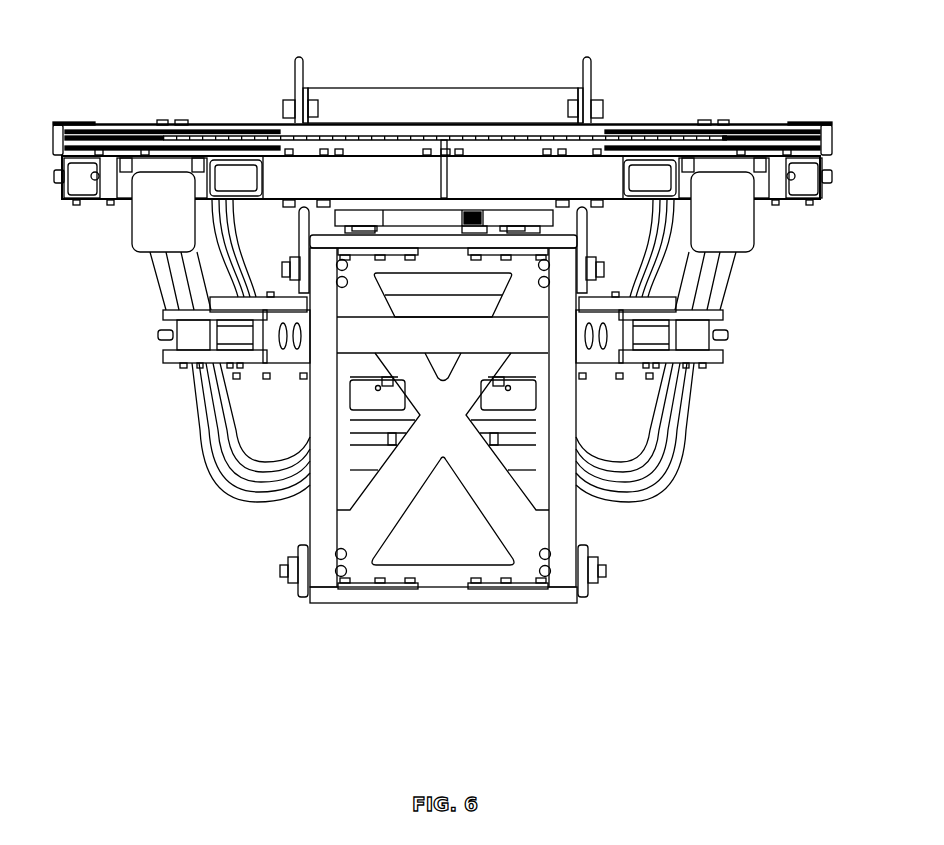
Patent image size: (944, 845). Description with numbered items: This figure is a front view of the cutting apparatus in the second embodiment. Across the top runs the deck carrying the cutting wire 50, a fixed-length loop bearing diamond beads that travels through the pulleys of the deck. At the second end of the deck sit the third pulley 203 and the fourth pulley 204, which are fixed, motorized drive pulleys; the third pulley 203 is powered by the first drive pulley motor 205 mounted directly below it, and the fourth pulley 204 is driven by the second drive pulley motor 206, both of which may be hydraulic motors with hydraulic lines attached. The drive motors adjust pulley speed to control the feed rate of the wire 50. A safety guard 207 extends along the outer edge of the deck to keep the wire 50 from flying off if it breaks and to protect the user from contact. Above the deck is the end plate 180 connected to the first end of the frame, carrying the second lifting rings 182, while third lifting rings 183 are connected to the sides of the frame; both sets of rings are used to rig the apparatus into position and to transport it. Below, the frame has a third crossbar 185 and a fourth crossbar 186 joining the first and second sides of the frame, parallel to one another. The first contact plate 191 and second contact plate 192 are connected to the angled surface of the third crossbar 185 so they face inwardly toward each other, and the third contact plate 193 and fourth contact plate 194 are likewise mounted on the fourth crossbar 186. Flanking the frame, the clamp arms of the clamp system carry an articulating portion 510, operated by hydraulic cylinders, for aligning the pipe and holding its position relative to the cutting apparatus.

The wire 50 is at (588, 137).
The end plate 180 is at (445, 88).
The second lifting rings 182 is at (300, 57).
The third lifting rings 183 is at (298, 548).
The third crossbar 185 is at (443, 595).
The fourth crossbar 186 is at (441, 242).
The first contact plate 191 is at (340, 263).
The second contact plate 192 is at (520, 252).
The third contact plate 193 is at (361, 590).
The fourth contact plate 194 is at (516, 590).
The third pulley 203 is at (767, 128).
The fourth pulley 204 is at (105, 128).
The first drive pulley motor 205 is at (753, 231).
The second drive pulley motor 206 is at (128, 233).
The safety guard 207 is at (56, 122).
The articulating portion 510 is at (186, 353).